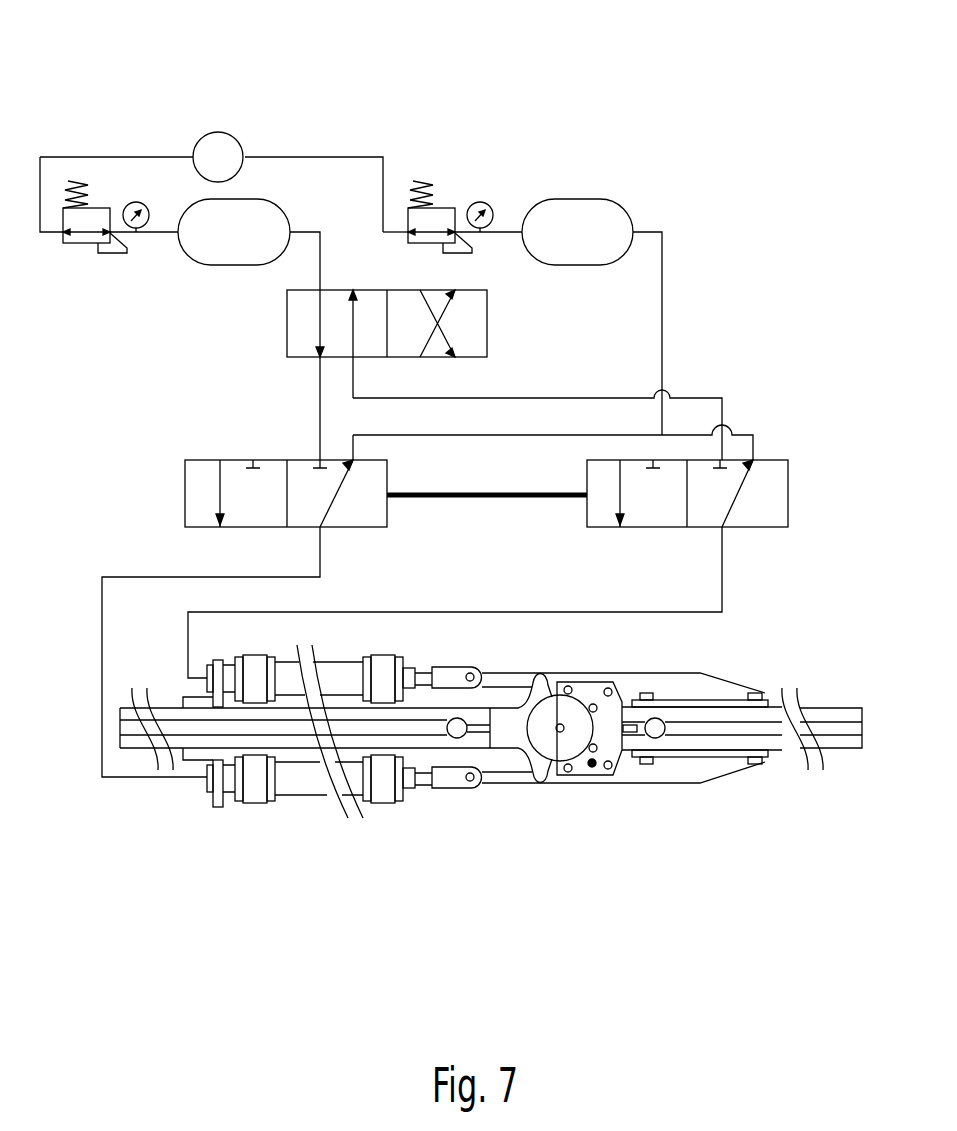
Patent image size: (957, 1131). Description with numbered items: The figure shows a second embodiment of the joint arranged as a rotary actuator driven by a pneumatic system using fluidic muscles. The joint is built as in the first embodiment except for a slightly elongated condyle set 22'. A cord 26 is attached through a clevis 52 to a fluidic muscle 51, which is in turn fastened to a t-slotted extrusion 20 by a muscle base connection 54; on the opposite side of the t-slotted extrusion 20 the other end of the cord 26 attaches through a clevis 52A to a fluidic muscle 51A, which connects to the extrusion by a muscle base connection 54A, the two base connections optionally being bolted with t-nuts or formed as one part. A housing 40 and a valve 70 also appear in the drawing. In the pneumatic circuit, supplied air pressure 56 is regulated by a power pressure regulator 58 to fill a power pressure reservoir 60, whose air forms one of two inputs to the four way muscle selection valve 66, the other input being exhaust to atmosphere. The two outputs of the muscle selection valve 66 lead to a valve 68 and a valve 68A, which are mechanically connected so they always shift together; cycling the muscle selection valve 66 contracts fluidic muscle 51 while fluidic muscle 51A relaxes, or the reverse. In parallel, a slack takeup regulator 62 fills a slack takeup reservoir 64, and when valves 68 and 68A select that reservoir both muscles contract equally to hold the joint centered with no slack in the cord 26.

The t-slotted extrusion 20 is at (195, 725).
The condyle set 22' is at (556, 765).
The cord 26 is at (520, 782).
The housing 40 is at (758, 728).
The fluidic muscle 51 is at (303, 787).
The fluidic muscle 51A is at (353, 675).
The clevis 52 is at (457, 777).
The clevis 52A is at (458, 677).
The muscle base connection 54 is at (220, 778).
The muscle base connection 54A is at (217, 683).
The supplied air pressure 56 is at (227, 153).
The power pressure regulator 58 is at (93, 215).
The power pressure reservoir 60 is at (252, 213).
The slack takeup regulator 62 is at (433, 217).
The slack takeup reservoir 64 is at (590, 215).
The muscle selection valve 66 is at (373, 300).
The valve 68 is at (240, 480).
The valve 68A is at (777, 477).
The directional control valve 70 is at (387, 233).